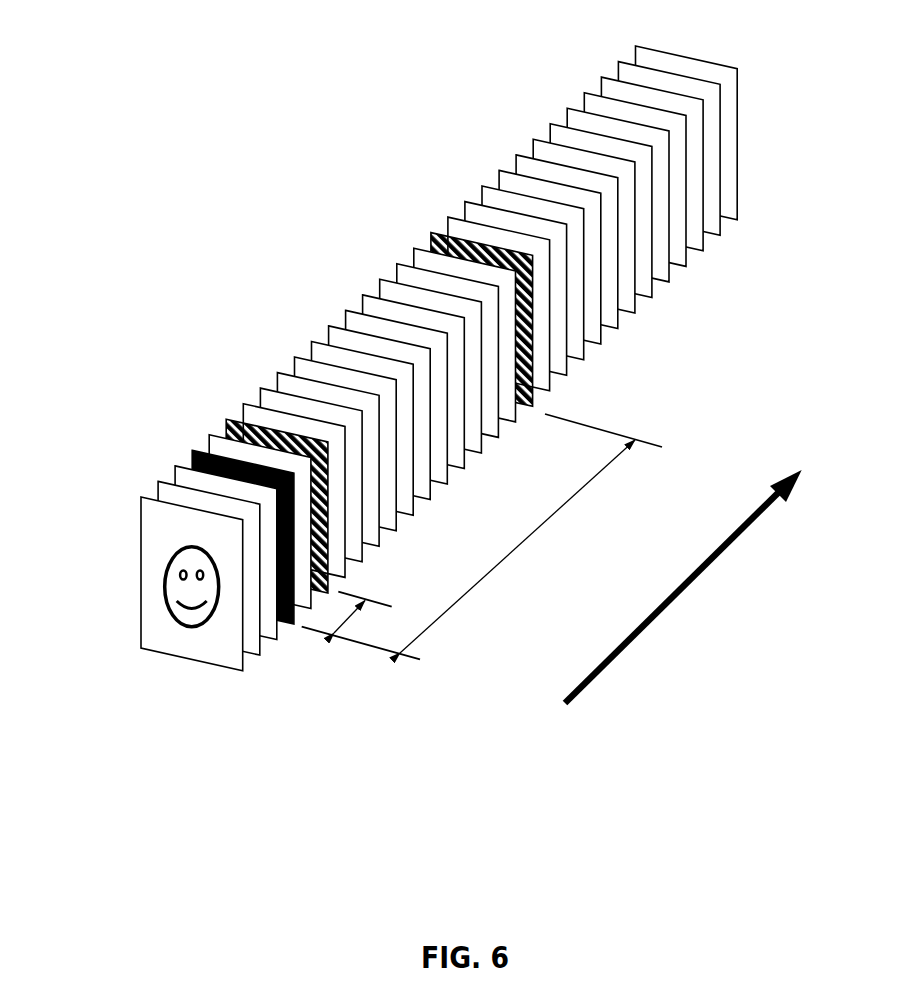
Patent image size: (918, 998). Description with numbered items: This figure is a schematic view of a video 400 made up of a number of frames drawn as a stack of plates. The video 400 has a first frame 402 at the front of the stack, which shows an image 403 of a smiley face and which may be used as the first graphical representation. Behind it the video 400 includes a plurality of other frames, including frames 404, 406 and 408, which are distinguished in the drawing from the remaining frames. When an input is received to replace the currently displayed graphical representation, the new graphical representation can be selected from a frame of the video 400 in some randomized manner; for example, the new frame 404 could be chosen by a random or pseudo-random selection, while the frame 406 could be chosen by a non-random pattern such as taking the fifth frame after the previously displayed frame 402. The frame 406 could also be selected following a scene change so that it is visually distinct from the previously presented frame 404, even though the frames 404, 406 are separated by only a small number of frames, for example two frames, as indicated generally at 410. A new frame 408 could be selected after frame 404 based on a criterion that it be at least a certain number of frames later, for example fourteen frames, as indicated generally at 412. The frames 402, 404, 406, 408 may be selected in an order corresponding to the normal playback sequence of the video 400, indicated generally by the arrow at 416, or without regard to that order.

The video 400 is at (250, 103).
The first frame 402 is at (141, 615).
The image 403 is at (185, 625).
The frame 404 is at (203, 450).
The frame 406 is at (237, 420).
The frame 408 is at (443, 233).
The frame separation 410 is at (352, 612).
The frame separation 412 is at (525, 537).
The normal playback sequence 416 is at (652, 623).